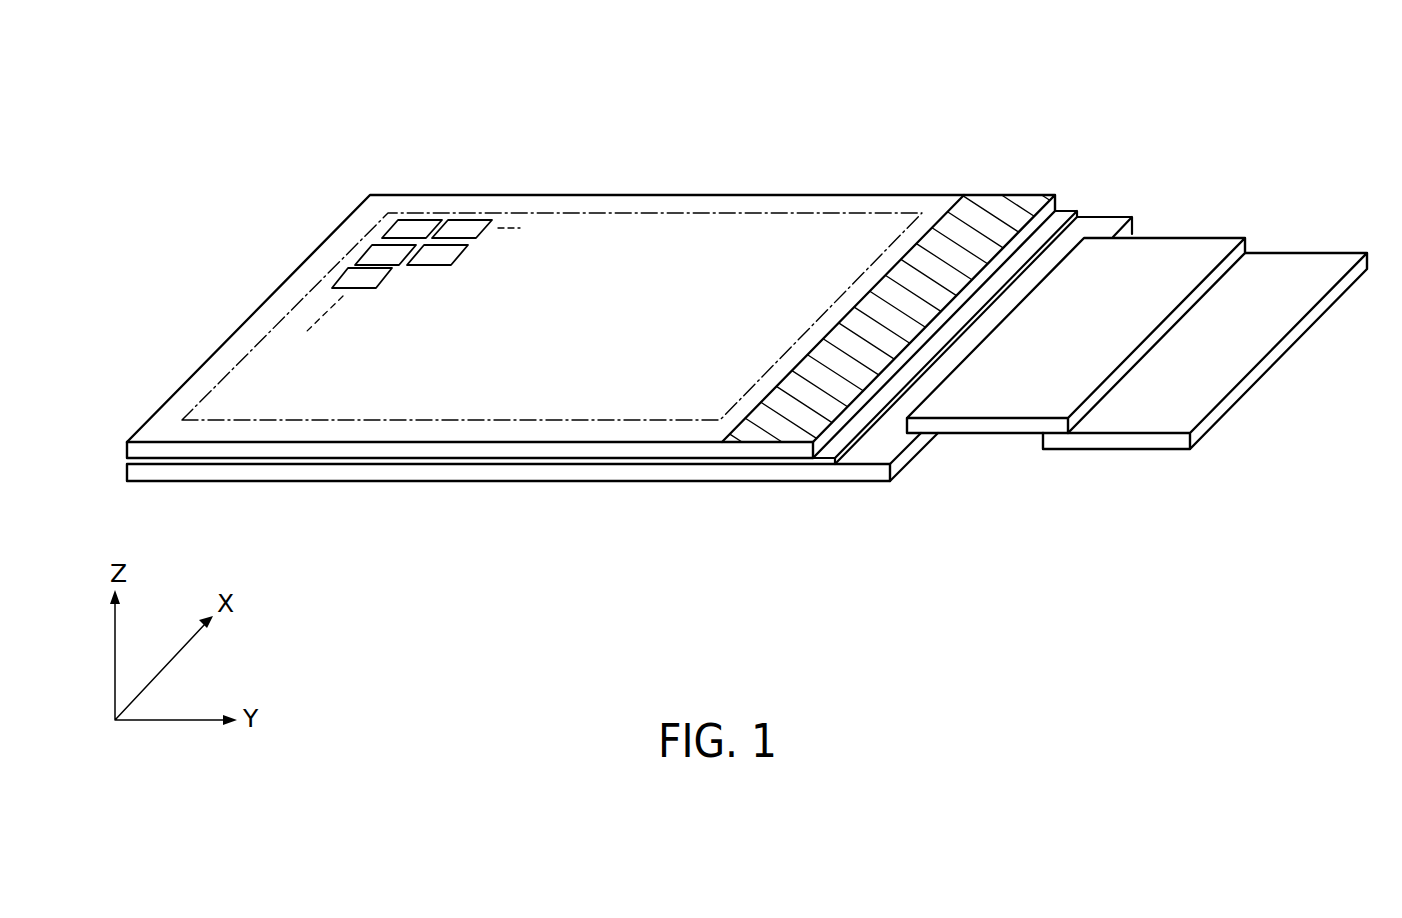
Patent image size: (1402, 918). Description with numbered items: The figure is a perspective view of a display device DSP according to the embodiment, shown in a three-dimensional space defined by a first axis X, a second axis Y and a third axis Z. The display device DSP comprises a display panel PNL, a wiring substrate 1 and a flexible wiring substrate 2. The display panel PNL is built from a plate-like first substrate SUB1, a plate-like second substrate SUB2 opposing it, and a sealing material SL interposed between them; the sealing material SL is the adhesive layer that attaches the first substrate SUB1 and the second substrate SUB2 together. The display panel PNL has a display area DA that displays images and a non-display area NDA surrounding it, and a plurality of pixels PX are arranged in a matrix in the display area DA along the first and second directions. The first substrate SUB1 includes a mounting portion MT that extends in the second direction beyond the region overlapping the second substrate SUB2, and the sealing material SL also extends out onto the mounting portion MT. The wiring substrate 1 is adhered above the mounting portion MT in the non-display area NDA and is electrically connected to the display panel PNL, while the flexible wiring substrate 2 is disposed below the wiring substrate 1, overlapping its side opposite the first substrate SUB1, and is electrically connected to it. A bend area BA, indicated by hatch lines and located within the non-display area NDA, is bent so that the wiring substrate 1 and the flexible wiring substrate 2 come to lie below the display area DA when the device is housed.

The display device DSP is at (898, 127).
The display panel PNL is at (976, 195).
The first substrate SUB1 is at (775, 472).
The second substrate SUB2 is at (655, 450).
The sealing material SL is at (1063, 216).
The mounting portion MT is at (1098, 226).
The display area DA is at (680, 215).
The non-display area NDA is at (711, 203).
The pixel PX is at (465, 228).
The bend area BA is at (948, 245).
The wiring substrate 1 is at (1003, 423).
The flexible wiring substrate 2 is at (1115, 442).